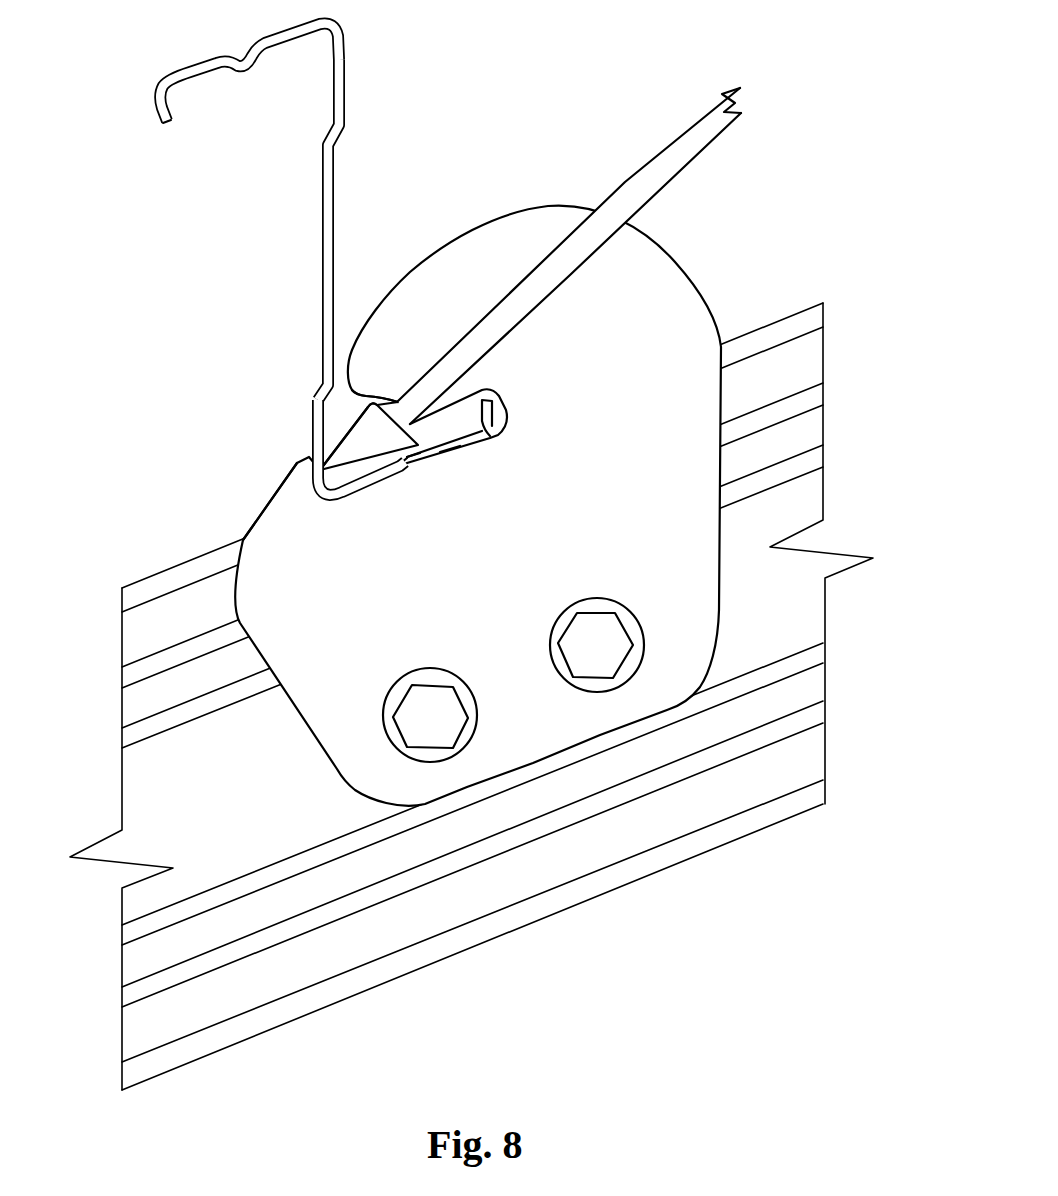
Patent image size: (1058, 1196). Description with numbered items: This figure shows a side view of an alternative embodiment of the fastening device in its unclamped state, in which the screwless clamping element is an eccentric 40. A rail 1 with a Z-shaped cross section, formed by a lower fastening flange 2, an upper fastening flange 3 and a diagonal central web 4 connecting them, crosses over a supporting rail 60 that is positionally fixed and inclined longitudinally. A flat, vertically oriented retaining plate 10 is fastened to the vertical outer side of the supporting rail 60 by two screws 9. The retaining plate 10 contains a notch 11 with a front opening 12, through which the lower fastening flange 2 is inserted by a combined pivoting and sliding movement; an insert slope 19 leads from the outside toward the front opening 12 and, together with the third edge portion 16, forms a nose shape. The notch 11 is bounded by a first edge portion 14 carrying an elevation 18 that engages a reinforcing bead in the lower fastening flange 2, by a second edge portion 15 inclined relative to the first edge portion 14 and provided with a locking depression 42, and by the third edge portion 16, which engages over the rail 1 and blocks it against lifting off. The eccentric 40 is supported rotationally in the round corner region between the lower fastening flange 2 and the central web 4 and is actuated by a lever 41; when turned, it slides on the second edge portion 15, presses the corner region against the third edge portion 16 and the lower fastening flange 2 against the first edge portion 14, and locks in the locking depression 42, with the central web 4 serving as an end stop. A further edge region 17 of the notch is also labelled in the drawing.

The rail 1 is at (381, 100).
The lower fastening flange 2 is at (282, 280).
The upper fastening flange 3 is at (197, 67).
The central web 4 is at (322, 248).
The screws 9 is at (468, 733).
The retaining plate 10 is at (479, 506).
The notch 11 is at (466, 432).
The front opening 12 is at (325, 424).
The first edge portion 14 is at (450, 462).
The second edge portion 15 is at (400, 402).
The third edge portion 16 is at (309, 497).
The edge 17 is at (418, 466).
The elevation 18 is at (407, 462).
The insert slope 19 is at (276, 488).
The eccentric 40 is at (381, 459).
The lever 41 is at (647, 163).
The locking depression 42 is at (380, 393).
The supporting rail 60 is at (695, 891).